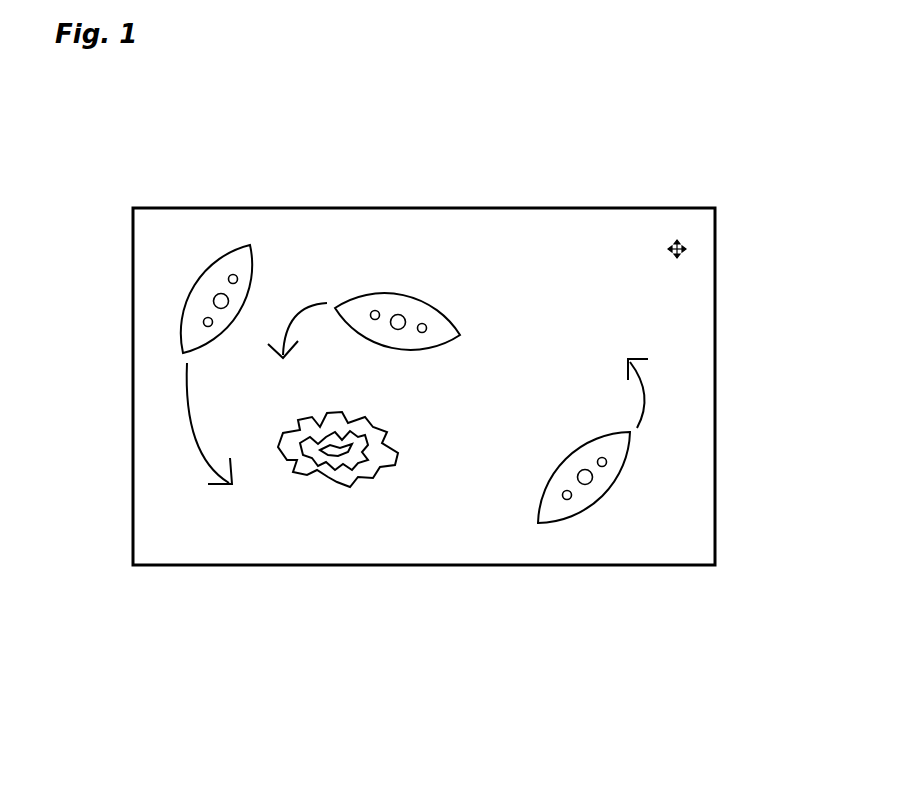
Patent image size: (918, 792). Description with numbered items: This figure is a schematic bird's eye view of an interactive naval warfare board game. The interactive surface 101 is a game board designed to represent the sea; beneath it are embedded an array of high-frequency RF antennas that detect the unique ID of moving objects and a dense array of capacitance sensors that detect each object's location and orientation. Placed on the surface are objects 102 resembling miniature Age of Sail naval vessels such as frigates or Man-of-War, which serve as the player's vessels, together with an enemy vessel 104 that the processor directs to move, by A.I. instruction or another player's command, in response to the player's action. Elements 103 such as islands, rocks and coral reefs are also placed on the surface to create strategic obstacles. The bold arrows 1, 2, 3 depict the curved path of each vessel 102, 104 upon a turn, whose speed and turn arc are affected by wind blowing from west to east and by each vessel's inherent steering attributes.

The interactive surface 101 is at (723, 202).
The player's vessel 102 is at (252, 238).
The element 103 is at (287, 483).
The enemy vessel 104 is at (403, 287).
The bold arrow 1 is at (204, 423).
The bold arrow 2 is at (297, 330).
The bold arrow 3 is at (635, 393).